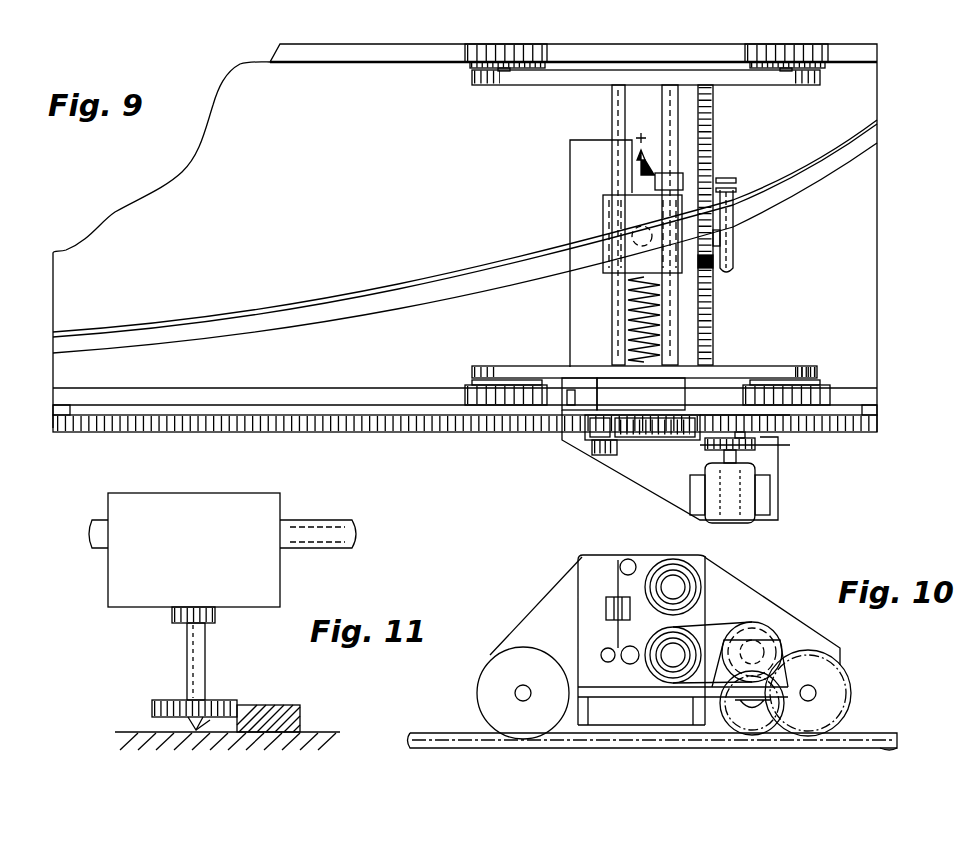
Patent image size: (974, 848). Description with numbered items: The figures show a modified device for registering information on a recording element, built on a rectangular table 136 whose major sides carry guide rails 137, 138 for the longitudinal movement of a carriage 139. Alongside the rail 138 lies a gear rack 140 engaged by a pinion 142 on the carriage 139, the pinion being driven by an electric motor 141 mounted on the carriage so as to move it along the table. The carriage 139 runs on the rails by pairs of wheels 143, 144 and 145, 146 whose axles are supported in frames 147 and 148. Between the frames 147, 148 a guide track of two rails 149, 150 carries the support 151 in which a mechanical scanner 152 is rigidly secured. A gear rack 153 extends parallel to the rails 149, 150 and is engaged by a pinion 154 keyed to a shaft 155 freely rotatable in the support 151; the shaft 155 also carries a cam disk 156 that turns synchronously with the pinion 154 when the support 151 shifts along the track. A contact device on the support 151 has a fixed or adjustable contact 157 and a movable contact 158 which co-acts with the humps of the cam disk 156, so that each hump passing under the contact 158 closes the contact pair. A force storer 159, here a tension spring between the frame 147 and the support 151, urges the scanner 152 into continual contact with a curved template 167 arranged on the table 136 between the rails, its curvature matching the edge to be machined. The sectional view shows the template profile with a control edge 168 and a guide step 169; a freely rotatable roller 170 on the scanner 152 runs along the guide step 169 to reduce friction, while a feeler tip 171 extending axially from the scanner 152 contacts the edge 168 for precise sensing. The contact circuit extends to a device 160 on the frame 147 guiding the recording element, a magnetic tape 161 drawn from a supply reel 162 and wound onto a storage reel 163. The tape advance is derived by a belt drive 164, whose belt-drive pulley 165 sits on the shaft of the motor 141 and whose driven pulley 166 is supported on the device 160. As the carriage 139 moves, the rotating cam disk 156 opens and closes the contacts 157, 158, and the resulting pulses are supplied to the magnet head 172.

In FIG. 9, the rectangular table 136 is at (866, 115).
In FIG. 10, the rectangular table 136 is at (640, 745).
In FIG. 9, the guide rail 137 is at (878, 50).
In FIG. 9, the guide rail 138 is at (878, 399).
In FIG. 9, the carriage 139 is at (684, 336).
In FIG. 9, the gear rack 140 is at (432, 433).
In FIG. 10, the gear rack 140 is at (884, 735).
In FIG. 9, the electric motor 141 is at (740, 505).
In FIG. 10, the electric motor 141 is at (760, 652).
In FIG. 9, the pinion 142 is at (770, 420).
In FIG. 10, the pinion 142 is at (760, 720).
In FIG. 9, the wheel 143 is at (518, 406).
In FIG. 10, the wheel 143 is at (490, 680).
In FIG. 9, the wheel 144 is at (812, 400).
In FIG. 10, the wheel 144 is at (832, 683).
In FIG. 9, the wheel 145 is at (470, 66).
In FIG. 9, the wheel 146 is at (822, 66).
In FIG. 9, the frame 147 is at (812, 368).
In FIG. 9, the frame 148 is at (494, 86).
In FIG. 9, the rail of guide track 149 is at (612, 118).
In FIG. 11, the rail of guide track 149 is at (340, 522).
In FIG. 9, the rail of guide track 150 is at (668, 98).
In FIG. 9, the support 151 is at (613, 247).
In FIG. 11, the support 151 is at (204, 498).
In FIG. 11, the mechanical scanner 152 is at (188, 648).
In FIG. 9, the gear rack 153 is at (713, 140).
In FIG. 9, the pinion 154 is at (710, 268).
In FIG. 9, the shaft 155 is at (733, 253).
In FIG. 9, the cam disk 156 is at (722, 238).
In FIG. 9, the contact 157 is at (735, 180).
In FIG. 9, the contact 158 is at (735, 195).
In FIG. 9, the force storer 159 is at (628, 330).
In FIG. 9, the device 160 is at (597, 388).
In FIG. 10, the device 160 is at (590, 561).
In FIG. 10, the magnetic tape 161 is at (628, 572).
In FIG. 10, the supply reel 162 is at (690, 595).
In FIG. 10, the storage reel 163 is at (695, 640).
In FIG. 9, the belt drive 164 is at (652, 445).
In FIG. 9, the belt-drive pulley 165 is at (756, 445).
In FIG. 9, the driven pulley 166 is at (600, 455).
In FIG. 10, the driven pulley 166 is at (610, 653).
In FIG. 9, the curved template 167 is at (246, 312).
In FIG. 11, the curved template 167 is at (300, 722).
In FIG. 11, the control edge 168 is at (196, 730).
In FIG. 11, the guide step 169 is at (245, 708).
In FIG. 11, the roller 170 is at (152, 708).
In FIG. 11, the feeler tip 171 is at (190, 724).
In FIG. 10, the magnet head 172 is at (606, 608).